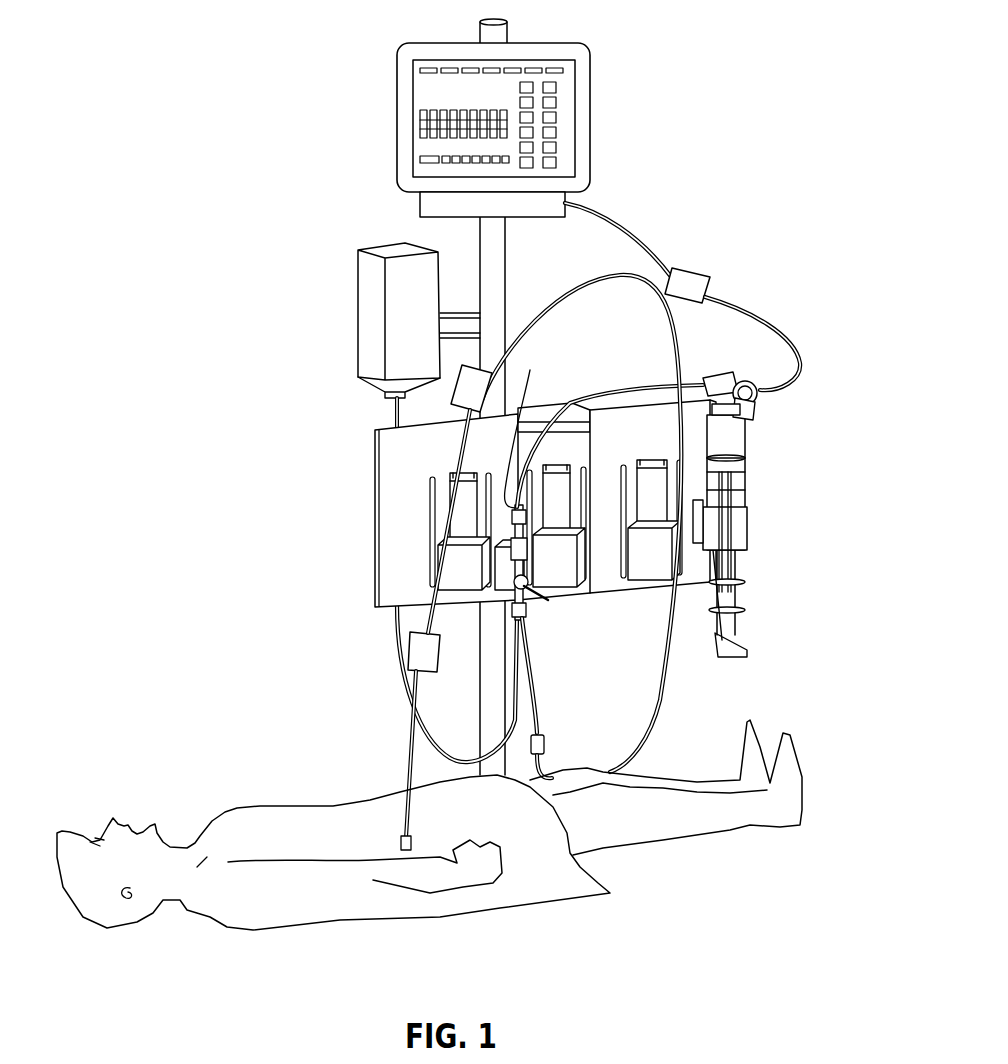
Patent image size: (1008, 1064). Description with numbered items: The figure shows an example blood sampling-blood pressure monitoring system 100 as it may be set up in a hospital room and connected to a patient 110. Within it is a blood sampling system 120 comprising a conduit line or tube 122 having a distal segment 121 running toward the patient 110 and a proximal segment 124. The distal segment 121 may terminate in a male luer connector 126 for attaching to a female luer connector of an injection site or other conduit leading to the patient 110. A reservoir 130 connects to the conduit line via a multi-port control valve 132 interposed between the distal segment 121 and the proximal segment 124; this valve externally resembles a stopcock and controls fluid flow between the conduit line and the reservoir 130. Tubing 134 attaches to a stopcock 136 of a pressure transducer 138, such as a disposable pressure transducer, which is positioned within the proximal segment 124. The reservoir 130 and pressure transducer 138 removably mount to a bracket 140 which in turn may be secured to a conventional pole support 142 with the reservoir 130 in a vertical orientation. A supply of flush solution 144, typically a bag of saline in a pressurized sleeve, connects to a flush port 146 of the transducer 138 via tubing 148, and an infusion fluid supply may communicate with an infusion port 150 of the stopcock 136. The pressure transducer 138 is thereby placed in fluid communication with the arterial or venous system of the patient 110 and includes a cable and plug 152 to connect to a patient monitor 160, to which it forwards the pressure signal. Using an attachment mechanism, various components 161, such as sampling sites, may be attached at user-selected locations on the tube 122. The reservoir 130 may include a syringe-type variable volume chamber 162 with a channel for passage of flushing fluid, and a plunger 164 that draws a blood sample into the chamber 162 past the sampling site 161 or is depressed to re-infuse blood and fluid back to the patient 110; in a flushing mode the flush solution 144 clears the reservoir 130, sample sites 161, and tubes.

The blood sampling-blood pressure monitoring system 100 is at (150, 329).
The patient 110 is at (219, 787).
The blood sampling system 120 is at (770, 415).
The distal segment 121 is at (410, 737).
The conduit line or tube 122 is at (413, 714).
The proximal segment 124 is at (623, 387).
The male luer connector 126 is at (402, 836).
The reservoir 130 is at (772, 532).
The multi-port control valve 132 is at (730, 366).
The tubing 134 is at (527, 426).
The stopcock 136 is at (513, 537).
The pressure transducer 138 is at (530, 600).
The bracket 140 is at (424, 459).
The pole support 142 is at (507, 285).
The supply of flush solution 144 is at (358, 347).
The flush port 146 is at (511, 607).
The tubing 148 is at (397, 630).
The infusion port 150 is at (600, 565).
The cable and plug 152 is at (547, 752).
The patient monitor 160 is at (592, 118).
The components 161 is at (700, 268).
The variable volume chamber 162 is at (748, 450).
The plunger 164 is at (742, 570).